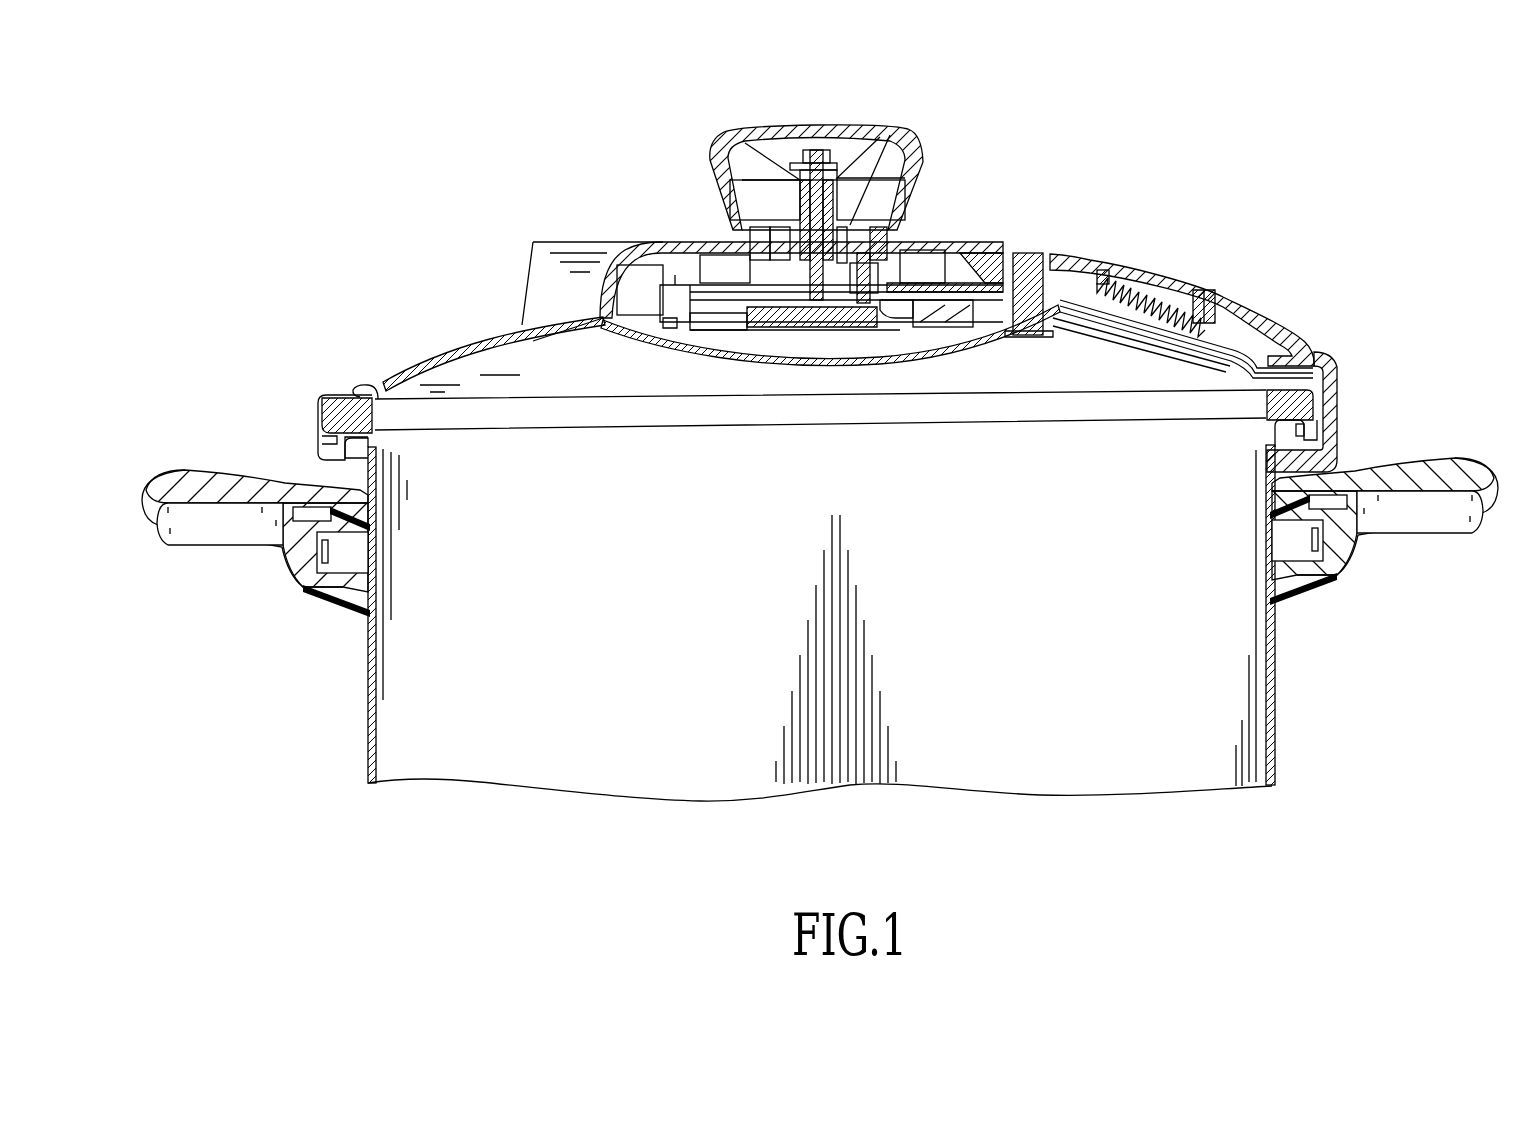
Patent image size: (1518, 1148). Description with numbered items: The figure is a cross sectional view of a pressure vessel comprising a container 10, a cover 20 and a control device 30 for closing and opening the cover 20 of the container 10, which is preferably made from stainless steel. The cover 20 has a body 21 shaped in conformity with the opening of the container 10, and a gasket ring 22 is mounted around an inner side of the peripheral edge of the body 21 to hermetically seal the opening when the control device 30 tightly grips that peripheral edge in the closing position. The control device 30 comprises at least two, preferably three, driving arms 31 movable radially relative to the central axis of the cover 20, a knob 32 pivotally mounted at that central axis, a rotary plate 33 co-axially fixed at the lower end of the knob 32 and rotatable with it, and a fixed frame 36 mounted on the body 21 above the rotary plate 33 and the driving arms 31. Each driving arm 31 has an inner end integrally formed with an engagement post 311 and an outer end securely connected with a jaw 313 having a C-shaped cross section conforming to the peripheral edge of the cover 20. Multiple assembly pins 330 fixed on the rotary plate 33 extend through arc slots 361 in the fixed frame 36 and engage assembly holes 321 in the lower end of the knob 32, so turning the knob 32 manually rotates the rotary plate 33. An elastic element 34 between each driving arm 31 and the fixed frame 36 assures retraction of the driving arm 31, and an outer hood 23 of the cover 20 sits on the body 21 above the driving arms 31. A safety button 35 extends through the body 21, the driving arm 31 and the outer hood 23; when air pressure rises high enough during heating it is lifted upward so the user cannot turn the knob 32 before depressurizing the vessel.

The container 10 is at (1270, 628).
The cover 20 is at (972, 350).
The body 21 is at (1107, 327).
The gasket ring 22 is at (1282, 400).
The outer hood 23 is at (1130, 263).
The control device 30 is at (980, 277).
The driving arm 31 is at (1128, 317).
The engagement post 311 is at (927, 323).
The jaw 313 is at (1333, 400).
The knob 32 is at (913, 162).
The assembly hole 321 is at (860, 247).
The rotary plate 33 is at (902, 318).
The assembly pin 330 is at (868, 246).
The elastic element 34 is at (1125, 318).
The safety button 35 is at (1028, 330).
The fixed frame 36 is at (873, 280).
The arc slot 361 is at (880, 283).